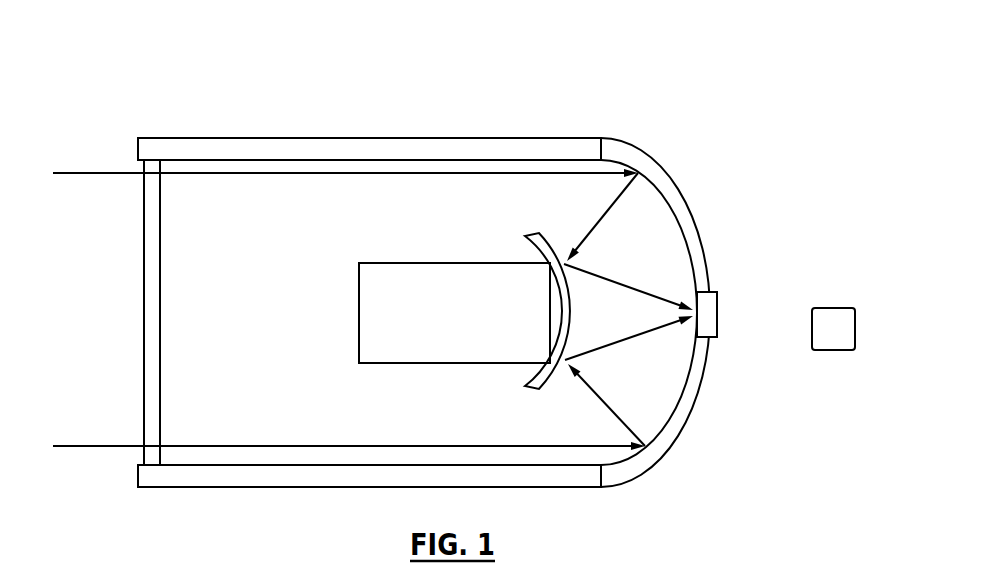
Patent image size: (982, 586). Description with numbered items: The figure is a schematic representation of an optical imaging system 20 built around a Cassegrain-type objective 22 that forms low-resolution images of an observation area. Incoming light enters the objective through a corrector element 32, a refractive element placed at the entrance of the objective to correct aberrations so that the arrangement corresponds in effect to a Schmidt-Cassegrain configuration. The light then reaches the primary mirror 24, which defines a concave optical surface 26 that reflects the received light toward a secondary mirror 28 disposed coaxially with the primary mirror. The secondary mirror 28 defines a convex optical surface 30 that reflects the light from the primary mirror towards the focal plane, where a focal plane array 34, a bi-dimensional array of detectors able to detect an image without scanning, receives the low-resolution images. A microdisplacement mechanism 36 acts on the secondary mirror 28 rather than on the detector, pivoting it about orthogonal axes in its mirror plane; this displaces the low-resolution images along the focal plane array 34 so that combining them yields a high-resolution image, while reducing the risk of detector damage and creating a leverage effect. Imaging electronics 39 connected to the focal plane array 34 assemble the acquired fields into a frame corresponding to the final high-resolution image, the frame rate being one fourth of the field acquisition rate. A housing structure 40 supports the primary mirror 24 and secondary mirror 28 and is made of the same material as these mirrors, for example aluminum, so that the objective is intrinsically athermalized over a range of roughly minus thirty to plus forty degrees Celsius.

The optical imaging system 20 is at (383, 90).
The Cassegrain-type objective 22 is at (728, 175).
The primary mirror 24 is at (633, 470).
The concave optical surface 26 is at (680, 414).
The secondary mirror 28 is at (522, 237).
The convex optical surface 30 is at (530, 389).
The corrector element 32 is at (152, 242).
The focal plane array 34 is at (713, 307).
The microdisplacement mechanism 36 is at (467, 311).
The imaging electronics 39 is at (717, 323).
The housing structure 40 is at (263, 477).